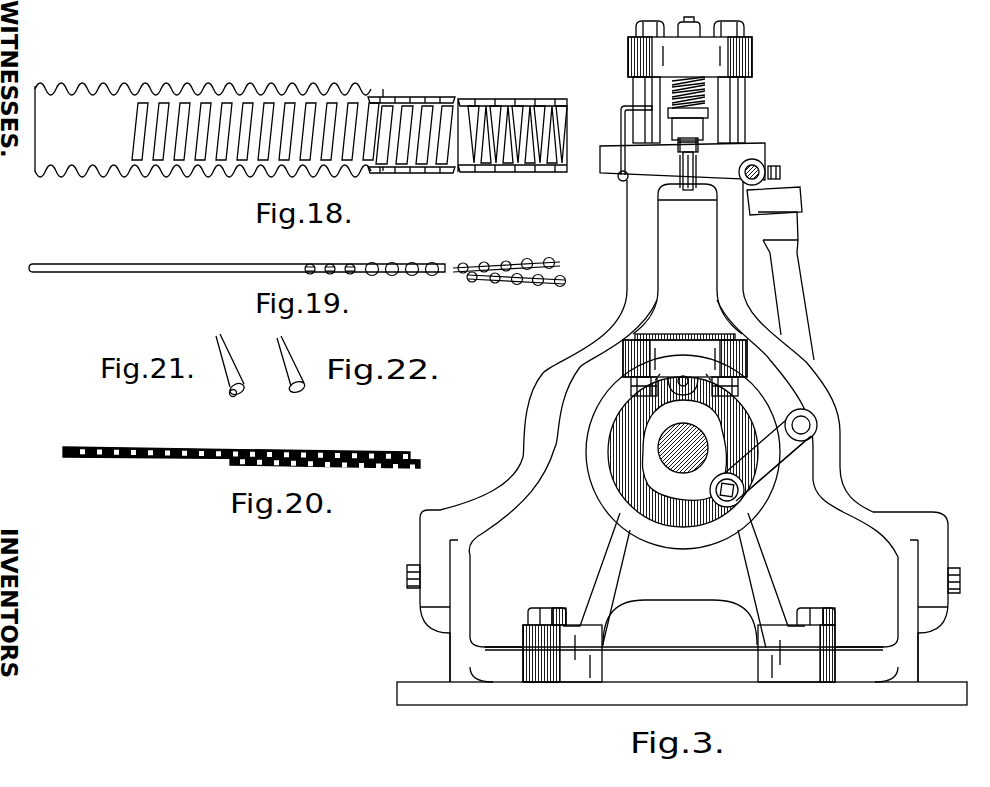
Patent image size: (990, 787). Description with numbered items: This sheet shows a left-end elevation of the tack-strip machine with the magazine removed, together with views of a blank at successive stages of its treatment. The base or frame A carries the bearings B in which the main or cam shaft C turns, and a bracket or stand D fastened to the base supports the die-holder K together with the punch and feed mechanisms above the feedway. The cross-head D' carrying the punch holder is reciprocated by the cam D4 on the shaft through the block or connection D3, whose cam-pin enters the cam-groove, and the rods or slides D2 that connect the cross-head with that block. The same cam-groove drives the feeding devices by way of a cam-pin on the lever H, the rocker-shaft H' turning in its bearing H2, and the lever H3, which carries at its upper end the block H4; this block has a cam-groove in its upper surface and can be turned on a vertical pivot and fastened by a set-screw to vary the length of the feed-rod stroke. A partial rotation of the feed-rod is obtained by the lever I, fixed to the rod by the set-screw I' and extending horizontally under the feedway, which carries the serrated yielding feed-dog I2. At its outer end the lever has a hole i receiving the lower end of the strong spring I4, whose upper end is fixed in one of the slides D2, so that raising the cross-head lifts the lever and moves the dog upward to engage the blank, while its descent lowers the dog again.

The base or frame A is at (682, 660).
The bearings B is at (684, 597).
The bracket or stand D is at (683, 431).
The cross-head D' is at (690, 47).
The rods or slides D2 is at (646, 91).
The block or connection D3 is at (662, 360).
The cam D4 is at (598, 437).
The main or cam shaft C is at (683, 448).
The lever H is at (760, 460).
The rocker-shaft H' is at (809, 425).
The bearing H2 is at (807, 412).
The lever H3 is at (786, 286).
The block H4 is at (774, 201).
The lever I is at (682, 164).
The set-screw I' is at (786, 168).
The serrated spring or yielding feed-dog I2 is at (678, 148).
The spring I4 is at (621, 142).
The hole i is at (620, 179).
The die-holder K is at (712, 127).